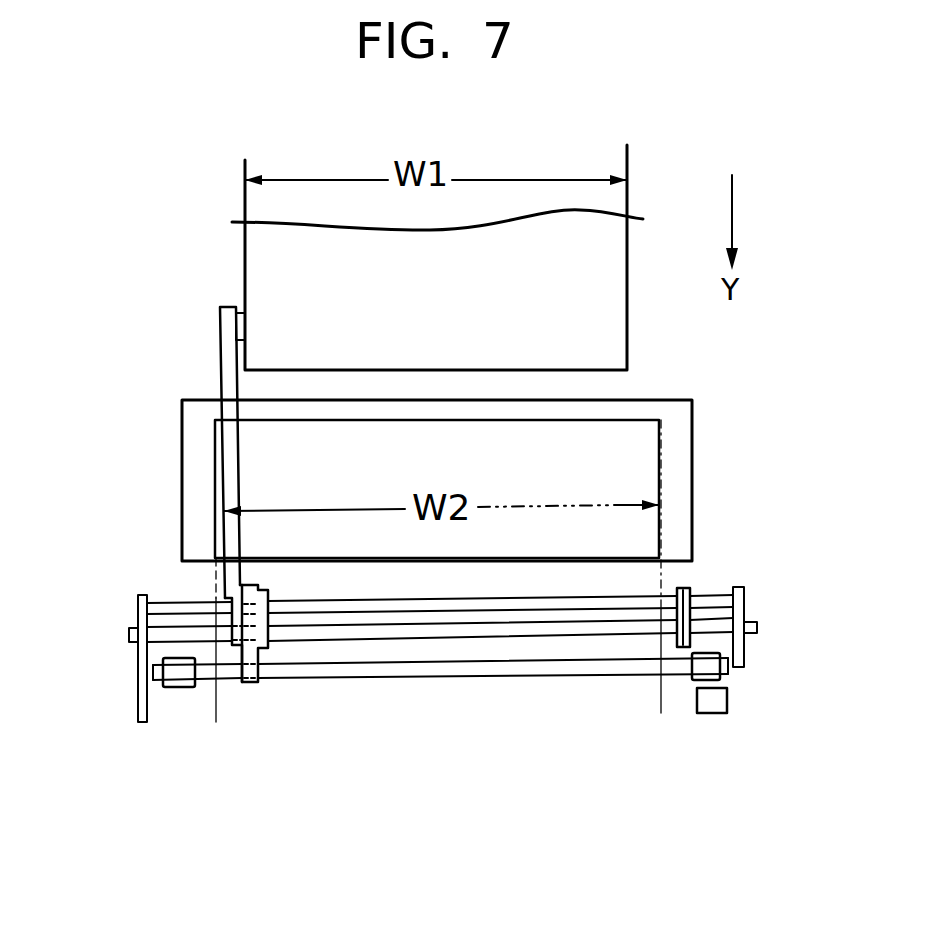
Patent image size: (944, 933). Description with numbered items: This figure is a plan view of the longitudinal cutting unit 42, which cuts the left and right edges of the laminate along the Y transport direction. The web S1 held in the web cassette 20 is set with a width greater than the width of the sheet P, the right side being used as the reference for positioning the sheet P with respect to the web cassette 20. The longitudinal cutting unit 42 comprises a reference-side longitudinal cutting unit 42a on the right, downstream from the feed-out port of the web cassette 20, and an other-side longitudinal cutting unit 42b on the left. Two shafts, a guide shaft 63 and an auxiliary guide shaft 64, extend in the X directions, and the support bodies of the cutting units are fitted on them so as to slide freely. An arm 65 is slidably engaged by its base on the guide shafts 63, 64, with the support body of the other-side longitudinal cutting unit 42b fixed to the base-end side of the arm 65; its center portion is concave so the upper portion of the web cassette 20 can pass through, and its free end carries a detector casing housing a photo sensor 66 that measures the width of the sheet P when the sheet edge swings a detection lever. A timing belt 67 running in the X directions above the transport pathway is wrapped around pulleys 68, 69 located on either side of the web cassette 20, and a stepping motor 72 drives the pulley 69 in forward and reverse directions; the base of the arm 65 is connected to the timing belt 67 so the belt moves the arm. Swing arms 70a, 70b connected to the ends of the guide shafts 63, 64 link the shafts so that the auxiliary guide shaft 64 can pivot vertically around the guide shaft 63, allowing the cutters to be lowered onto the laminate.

The sheet P is at (595, 258).
The web cassette 20 is at (700, 399).
The web S1 is at (625, 467).
The longitudinal cutting unit 42 is at (135, 480).
The reference-side longitudinal cutting unit 42a is at (688, 590).
The other-side longitudinal cutting unit 42b is at (280, 591).
The guide shaft 63 is at (427, 633).
The auxiliary guide shaft 64 is at (543, 604).
The arm 65 is at (226, 440).
The photo sensor 66 is at (240, 330).
The timing belt 67 is at (600, 670).
The pulley 68 is at (178, 687).
The pulley 69 is at (717, 673).
The right swing arm 70a is at (140, 708).
The swing arm 70b is at (745, 660).
The stepping motor 72 is at (703, 703).